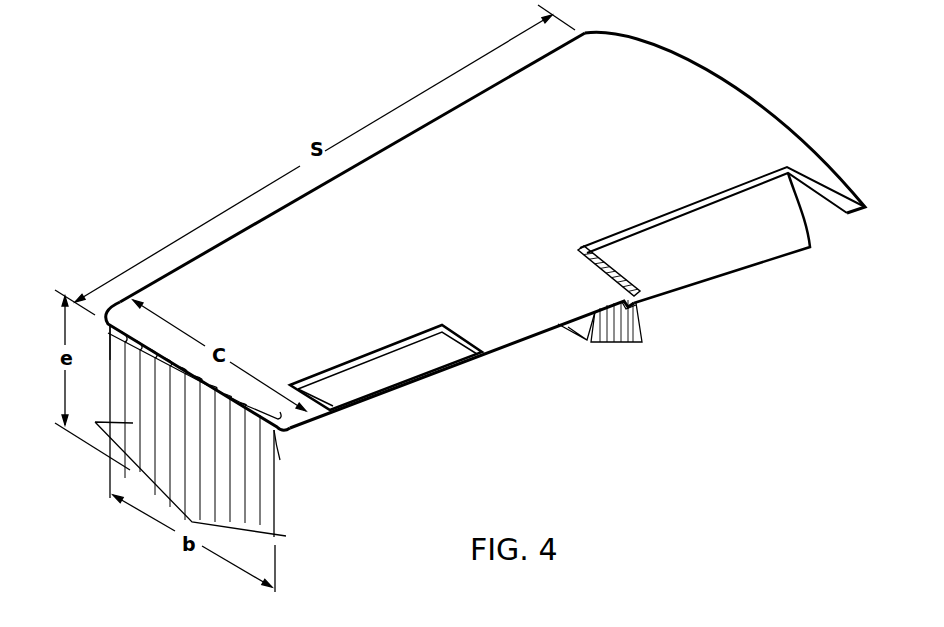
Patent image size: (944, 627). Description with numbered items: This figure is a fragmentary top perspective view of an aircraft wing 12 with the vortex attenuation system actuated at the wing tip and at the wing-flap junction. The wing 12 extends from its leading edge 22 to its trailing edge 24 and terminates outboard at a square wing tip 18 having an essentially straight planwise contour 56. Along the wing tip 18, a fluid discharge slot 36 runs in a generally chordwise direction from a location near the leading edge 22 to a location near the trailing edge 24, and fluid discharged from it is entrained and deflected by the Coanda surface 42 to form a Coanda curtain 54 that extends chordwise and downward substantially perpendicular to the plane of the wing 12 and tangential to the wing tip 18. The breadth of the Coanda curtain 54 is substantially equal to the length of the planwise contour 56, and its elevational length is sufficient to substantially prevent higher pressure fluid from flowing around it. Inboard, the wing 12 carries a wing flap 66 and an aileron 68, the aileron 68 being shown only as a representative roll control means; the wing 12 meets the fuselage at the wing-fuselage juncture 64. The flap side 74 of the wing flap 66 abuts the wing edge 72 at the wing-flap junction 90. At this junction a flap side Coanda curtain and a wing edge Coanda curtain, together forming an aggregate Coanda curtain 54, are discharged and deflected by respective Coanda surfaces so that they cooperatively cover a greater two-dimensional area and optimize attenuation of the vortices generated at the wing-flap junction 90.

The wing 12 is at (247, 212).
The trailing edge 24 is at (412, 130).
The wing-fuselage juncture 64 is at (657, 48).
The leading edge 22 is at (513, 343).
The wing-flap junction 90 is at (610, 247).
The wing flap 66 is at (810, 247).
The wing edge 72 is at (610, 268).
The flap side 74 is at (630, 312).
The Coanda curtain 54 is at (618, 323).
The aileron 68 is at (410, 385).
The fluid discharge slot 36 is at (230, 378).
The wing tip 18 is at (225, 397).
The Coanda surface 42 is at (147, 337).
The planwise contour 56 is at (278, 432).